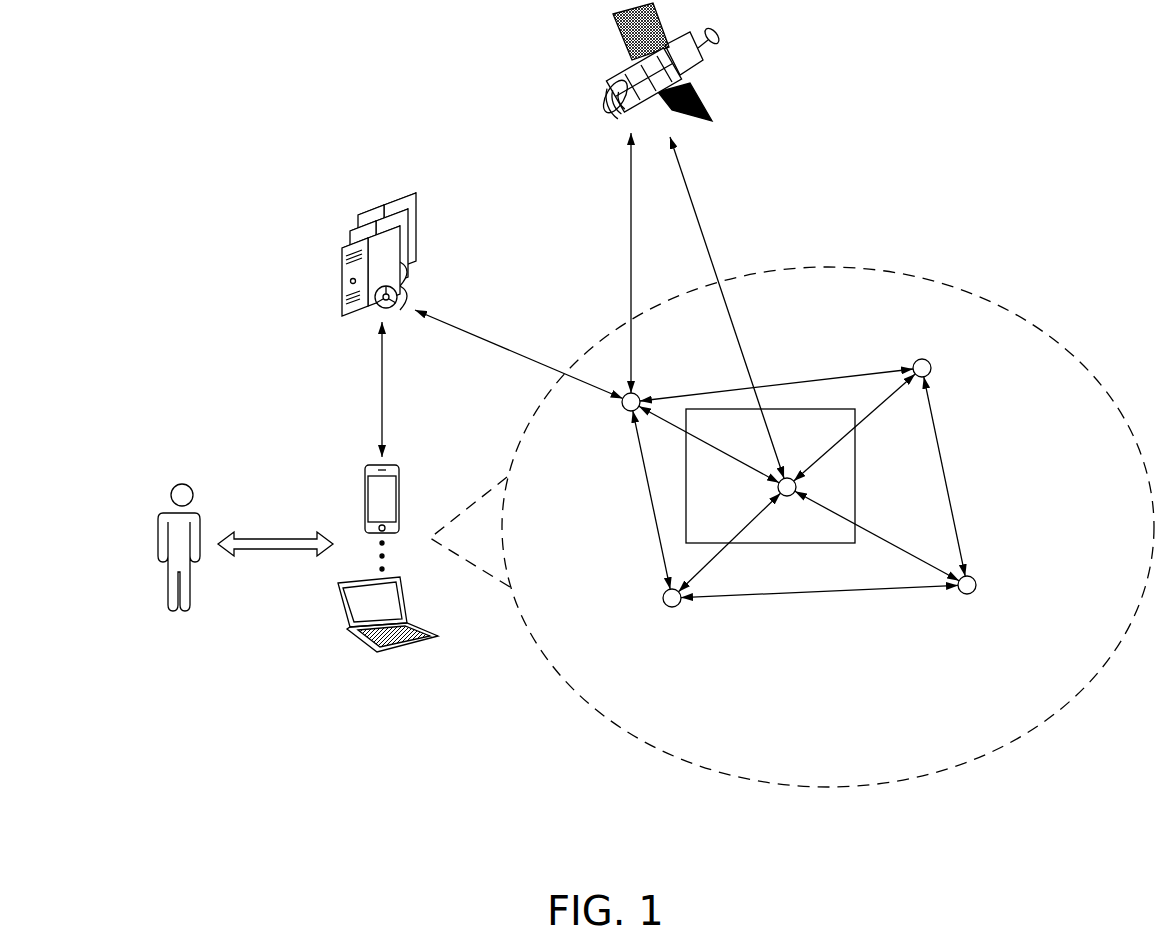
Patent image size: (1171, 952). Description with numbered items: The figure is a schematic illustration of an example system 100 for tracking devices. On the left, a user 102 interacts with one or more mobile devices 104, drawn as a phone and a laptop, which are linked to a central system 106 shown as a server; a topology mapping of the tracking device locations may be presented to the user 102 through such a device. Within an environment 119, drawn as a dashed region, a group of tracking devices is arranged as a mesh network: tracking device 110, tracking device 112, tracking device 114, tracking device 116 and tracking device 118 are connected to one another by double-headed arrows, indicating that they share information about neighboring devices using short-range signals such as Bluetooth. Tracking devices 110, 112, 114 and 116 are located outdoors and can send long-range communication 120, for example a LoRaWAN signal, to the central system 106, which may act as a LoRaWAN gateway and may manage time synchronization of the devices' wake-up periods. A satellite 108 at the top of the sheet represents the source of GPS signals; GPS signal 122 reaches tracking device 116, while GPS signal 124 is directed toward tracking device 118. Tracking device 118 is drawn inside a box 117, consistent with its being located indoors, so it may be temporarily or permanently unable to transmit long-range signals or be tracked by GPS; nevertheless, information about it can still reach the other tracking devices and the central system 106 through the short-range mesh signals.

The system 100 is at (289, 93).
The user 102 is at (150, 519).
The mobile device 104 is at (343, 483).
The central system 106 is at (330, 216).
The satellite 108 is at (608, 44).
The tracking device 110 is at (976, 590).
The tracking device 112 is at (663, 600).
The tracking device 114 is at (932, 372).
The tracking device 116 is at (622, 404).
The region 117 is at (806, 408).
The tracking device 118 is at (778, 489).
The environment 119 is at (1083, 510).
The long-range communication 120 is at (484, 339).
The GPS signal 122 is at (628, 210).
The GPS signal 124 is at (692, 198).